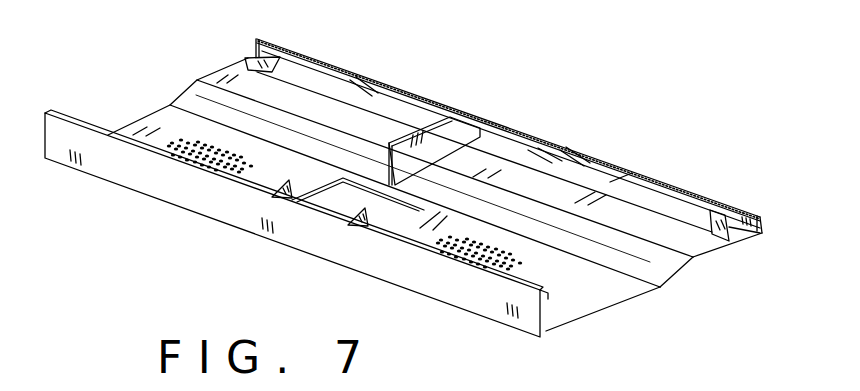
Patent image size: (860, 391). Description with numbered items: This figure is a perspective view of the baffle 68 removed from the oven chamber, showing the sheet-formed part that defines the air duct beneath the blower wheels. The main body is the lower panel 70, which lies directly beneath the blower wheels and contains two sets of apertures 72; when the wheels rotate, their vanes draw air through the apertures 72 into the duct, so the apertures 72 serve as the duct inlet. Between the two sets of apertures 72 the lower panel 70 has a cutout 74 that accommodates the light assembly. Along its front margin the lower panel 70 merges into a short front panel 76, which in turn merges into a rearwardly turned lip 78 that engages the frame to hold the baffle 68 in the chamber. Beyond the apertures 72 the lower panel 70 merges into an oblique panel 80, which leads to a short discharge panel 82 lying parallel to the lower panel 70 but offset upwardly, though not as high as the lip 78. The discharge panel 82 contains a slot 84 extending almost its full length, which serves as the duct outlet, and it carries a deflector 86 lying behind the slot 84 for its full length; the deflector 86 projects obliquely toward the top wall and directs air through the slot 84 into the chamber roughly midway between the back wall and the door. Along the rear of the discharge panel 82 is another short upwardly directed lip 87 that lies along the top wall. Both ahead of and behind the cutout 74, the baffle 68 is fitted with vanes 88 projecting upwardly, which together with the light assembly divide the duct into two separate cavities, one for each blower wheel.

The baffle 68 is at (641, 163).
The lower panel 70 is at (601, 298).
The apertures 72 is at (175, 142).
The cutout 74 is at (338, 198).
The front panel 76 is at (493, 298).
The lip 78 is at (79, 119).
The oblique panel 80 is at (678, 260).
The discharge panel 82 is at (728, 246).
The slot 84 is at (600, 197).
The deflector 86 is at (410, 100).
The lip 87 is at (765, 226).
The vanes 88 is at (358, 217).